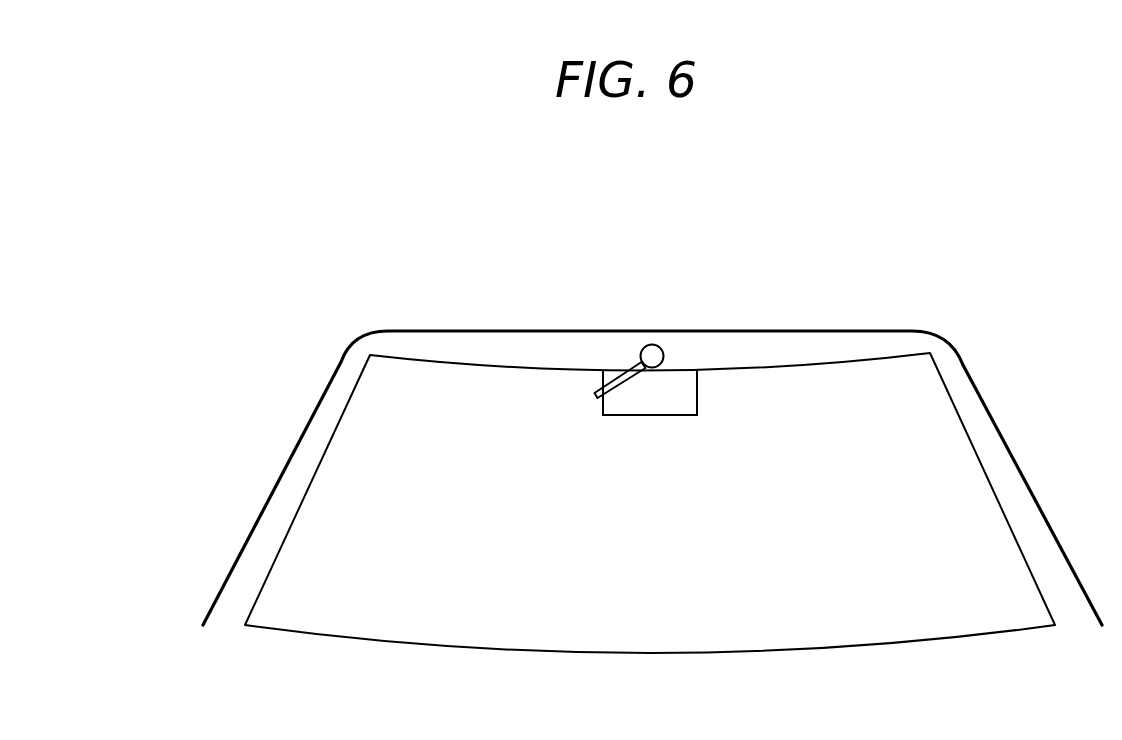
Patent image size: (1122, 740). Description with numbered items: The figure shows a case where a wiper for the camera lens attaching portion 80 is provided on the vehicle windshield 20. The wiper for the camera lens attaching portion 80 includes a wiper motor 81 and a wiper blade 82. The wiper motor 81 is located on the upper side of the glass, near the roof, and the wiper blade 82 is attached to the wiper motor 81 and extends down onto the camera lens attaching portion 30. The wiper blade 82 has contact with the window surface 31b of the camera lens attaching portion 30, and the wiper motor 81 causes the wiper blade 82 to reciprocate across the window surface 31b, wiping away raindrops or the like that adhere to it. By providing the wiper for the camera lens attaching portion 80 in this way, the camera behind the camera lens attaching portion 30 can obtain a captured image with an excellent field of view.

The windshield 20 is at (357, 473).
The camera lens attaching portion 30 is at (713, 400).
The window surface 31b is at (675, 400).
The wiper for the camera lens attaching portion 80 is at (624, 351).
The wiper motor 81 is at (652, 344).
The wiper blade 82 is at (593, 393).